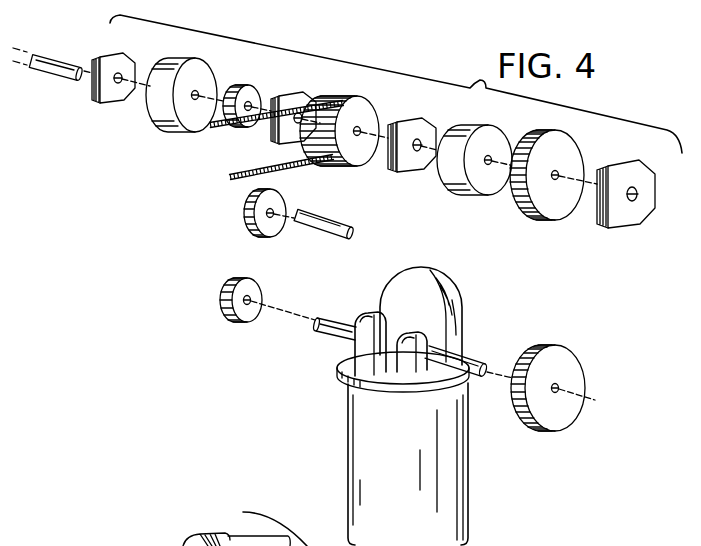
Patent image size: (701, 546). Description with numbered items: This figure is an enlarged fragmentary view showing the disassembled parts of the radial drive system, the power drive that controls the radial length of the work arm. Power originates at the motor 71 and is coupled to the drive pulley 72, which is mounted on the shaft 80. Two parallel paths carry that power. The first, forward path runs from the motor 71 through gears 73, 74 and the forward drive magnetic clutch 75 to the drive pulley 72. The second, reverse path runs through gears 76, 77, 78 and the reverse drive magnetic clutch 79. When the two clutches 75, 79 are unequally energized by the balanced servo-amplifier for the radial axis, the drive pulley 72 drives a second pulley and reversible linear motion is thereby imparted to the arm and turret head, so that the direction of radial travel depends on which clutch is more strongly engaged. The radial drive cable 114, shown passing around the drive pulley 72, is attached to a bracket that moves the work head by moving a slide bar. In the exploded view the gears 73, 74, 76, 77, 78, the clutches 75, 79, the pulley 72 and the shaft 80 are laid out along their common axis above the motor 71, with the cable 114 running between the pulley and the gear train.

The motor 71 is at (447, 491).
The drive pulley 72 is at (370, 112).
The gear 73 is at (565, 367).
The gear 74 is at (553, 212).
The forward drive magnetic clutch 75 is at (469, 184).
The gear 76 is at (220, 303).
The gear 77 is at (245, 216).
The gear 78 is at (243, 84).
The reverse drive magnetic clutch 79 is at (192, 70).
The shaft 80 is at (50, 60).
The radial drive cable 114 is at (253, 167).